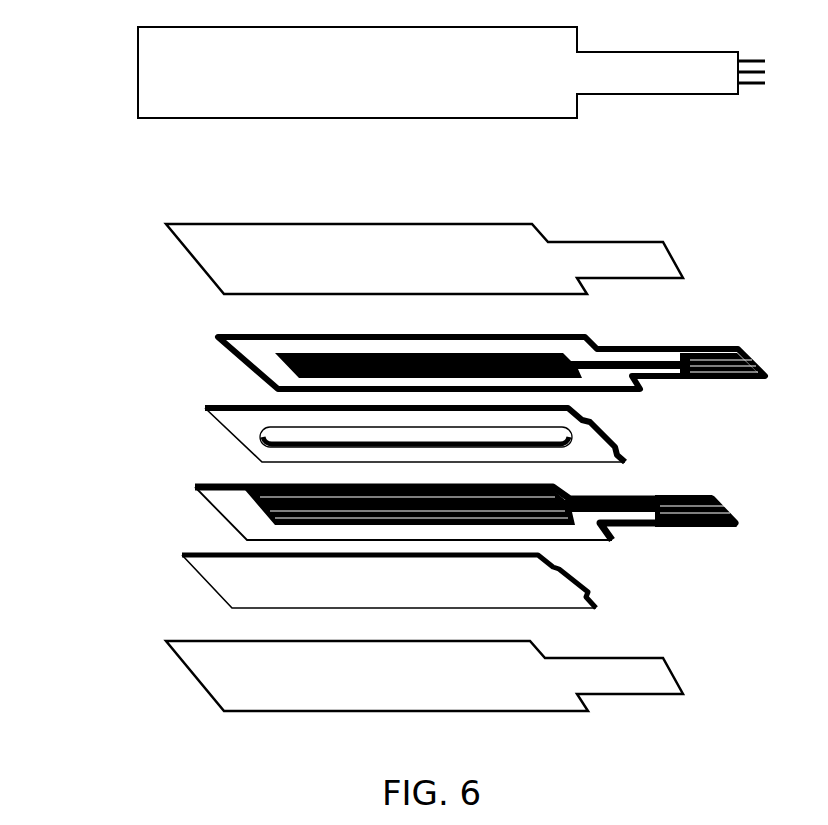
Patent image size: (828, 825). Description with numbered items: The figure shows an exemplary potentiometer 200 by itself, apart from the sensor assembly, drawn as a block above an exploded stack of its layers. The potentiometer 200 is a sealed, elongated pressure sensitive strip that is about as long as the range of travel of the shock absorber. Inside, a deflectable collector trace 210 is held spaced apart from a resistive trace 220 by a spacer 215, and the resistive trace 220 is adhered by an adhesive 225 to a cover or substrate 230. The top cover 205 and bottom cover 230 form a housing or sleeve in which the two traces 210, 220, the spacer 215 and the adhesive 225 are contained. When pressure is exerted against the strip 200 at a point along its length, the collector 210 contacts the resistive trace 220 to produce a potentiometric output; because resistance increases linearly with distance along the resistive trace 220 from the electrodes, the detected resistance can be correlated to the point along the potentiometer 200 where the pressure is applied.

The potentiometer 200 is at (451, 72).
The top cover 205 is at (382, 259).
The collector trace 210 is at (421, 365).
The spacer 215 is at (371, 437).
The resistive trace 220 is at (379, 513).
The adhesive 225 is at (333, 581).
The bottom cover 230 is at (369, 676).